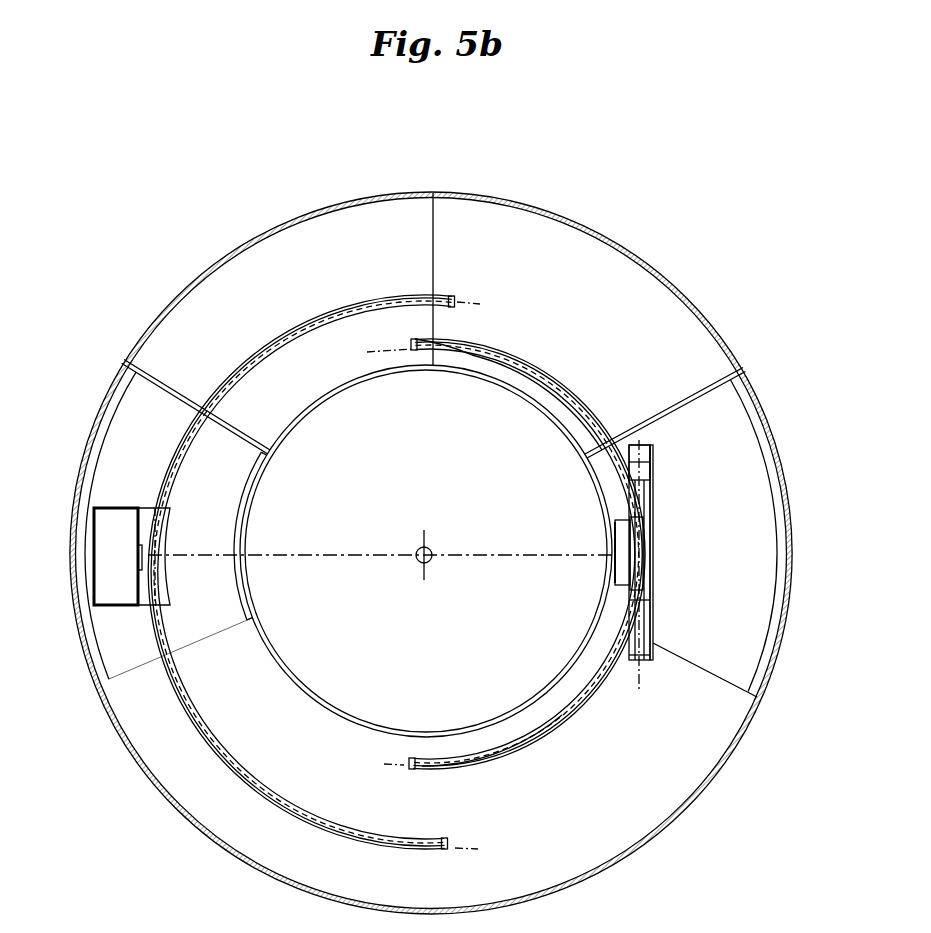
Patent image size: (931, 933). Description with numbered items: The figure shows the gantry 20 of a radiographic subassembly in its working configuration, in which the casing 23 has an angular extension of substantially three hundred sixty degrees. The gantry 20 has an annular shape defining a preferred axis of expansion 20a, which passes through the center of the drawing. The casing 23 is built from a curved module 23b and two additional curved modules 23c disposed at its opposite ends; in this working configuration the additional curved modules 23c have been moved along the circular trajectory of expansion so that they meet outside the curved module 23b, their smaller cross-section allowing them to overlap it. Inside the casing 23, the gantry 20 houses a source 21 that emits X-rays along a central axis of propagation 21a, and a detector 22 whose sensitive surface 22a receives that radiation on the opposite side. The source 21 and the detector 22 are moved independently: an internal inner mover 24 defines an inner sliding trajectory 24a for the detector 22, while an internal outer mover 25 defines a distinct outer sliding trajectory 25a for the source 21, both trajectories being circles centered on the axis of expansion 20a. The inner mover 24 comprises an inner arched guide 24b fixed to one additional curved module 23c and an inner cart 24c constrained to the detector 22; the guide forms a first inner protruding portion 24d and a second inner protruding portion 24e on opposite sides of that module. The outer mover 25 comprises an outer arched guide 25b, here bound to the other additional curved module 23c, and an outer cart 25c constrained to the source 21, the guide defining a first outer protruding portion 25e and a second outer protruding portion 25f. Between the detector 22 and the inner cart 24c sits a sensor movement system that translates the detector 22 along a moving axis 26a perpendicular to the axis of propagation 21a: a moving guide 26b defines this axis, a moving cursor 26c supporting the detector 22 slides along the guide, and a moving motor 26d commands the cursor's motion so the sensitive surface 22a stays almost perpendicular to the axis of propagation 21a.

The gantry 20 is at (112, 282).
The preferred axis of expansion 20a is at (430, 561).
The source 21 is at (185, 545).
The central axis of propagation 21a is at (278, 560).
The detector 22 is at (603, 545).
The sensitive surface 22a is at (612, 567).
The casing 23 is at (683, 846).
The curved module 23b is at (700, 725).
The additional curved module 23c is at (283, 257).
The internal inner mover 24 is at (712, 366).
The inner sliding trajectory 24a is at (361, 353).
The inner arched guide 24b is at (582, 364).
The inner cart 24c is at (653, 503).
The first inner protruding portion 24d is at (423, 762).
The second inner protruding portion 24e is at (417, 340).
The internal outer mover 25 is at (290, 712).
The outer sliding trajectory 25a is at (524, 845).
The outer arched guide 25b is at (198, 800).
The outer cart 25c is at (157, 508).
The first outer protruding portion 25e is at (378, 838).
The second outer protruding portion 25f is at (448, 298).
The moving axis 26a is at (640, 688).
The moving guide 26b is at (653, 640).
The moving cursor 26c is at (643, 582).
The moving motor 26d is at (650, 448).